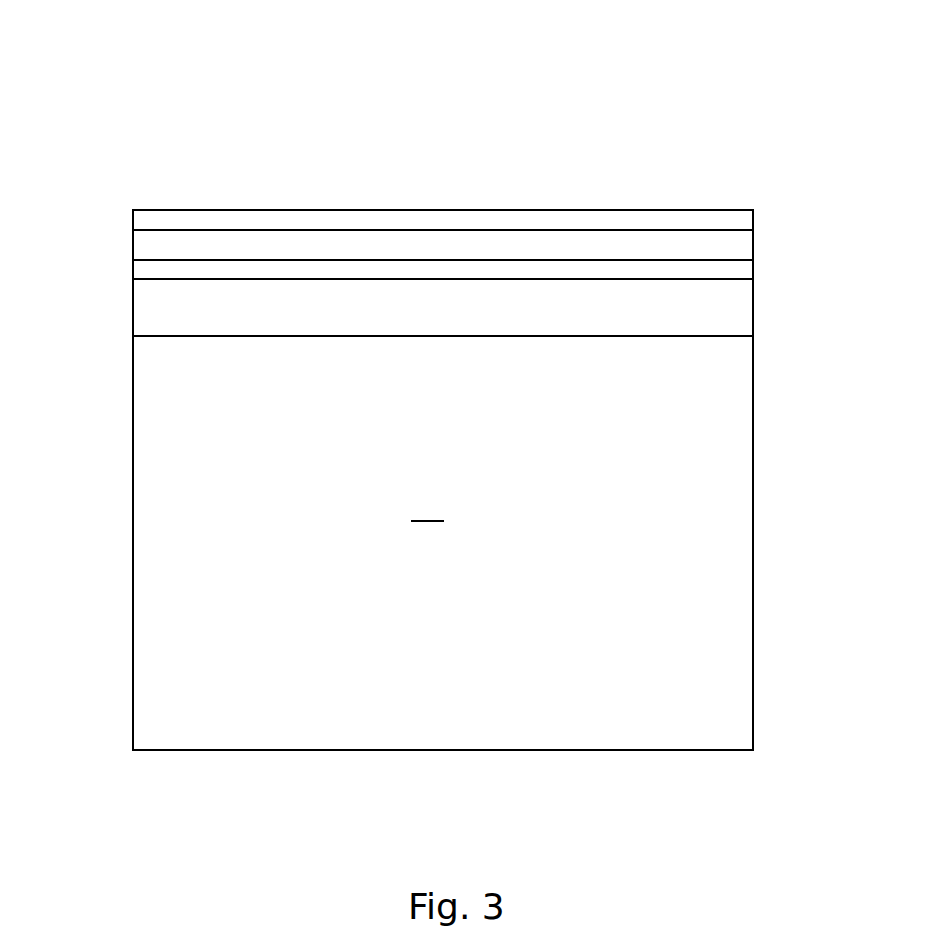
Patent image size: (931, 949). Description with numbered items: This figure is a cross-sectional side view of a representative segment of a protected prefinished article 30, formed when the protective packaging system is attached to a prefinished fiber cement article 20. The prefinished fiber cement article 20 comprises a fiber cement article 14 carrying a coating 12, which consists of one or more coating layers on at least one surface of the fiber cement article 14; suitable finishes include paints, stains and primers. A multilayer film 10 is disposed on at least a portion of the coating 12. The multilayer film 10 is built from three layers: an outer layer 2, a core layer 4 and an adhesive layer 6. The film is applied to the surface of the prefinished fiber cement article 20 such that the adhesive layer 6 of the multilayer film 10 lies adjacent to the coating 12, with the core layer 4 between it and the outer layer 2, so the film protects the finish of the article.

The protected prefinished article 30 is at (722, 130).
The outer layer 2 is at (742, 215).
The core layer 4 is at (733, 237).
The adhesive layer 6 is at (740, 266).
The multilayer film 10 is at (133, 279).
The coating 12 is at (723, 308).
The fiber cement article 14 is at (703, 514).
The prefinished fiber cement article 20 is at (128, 279).